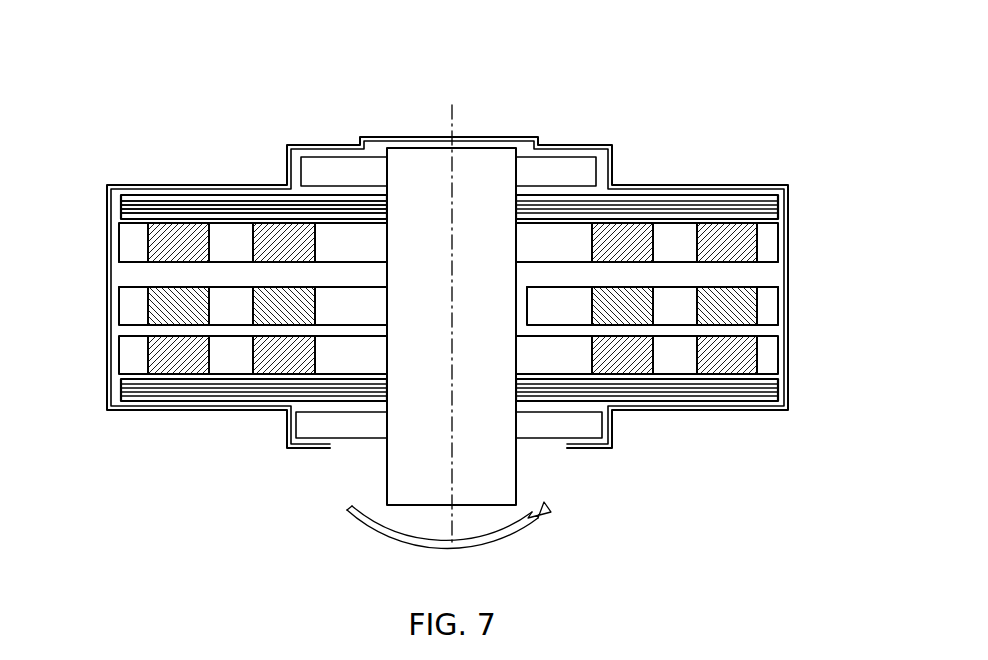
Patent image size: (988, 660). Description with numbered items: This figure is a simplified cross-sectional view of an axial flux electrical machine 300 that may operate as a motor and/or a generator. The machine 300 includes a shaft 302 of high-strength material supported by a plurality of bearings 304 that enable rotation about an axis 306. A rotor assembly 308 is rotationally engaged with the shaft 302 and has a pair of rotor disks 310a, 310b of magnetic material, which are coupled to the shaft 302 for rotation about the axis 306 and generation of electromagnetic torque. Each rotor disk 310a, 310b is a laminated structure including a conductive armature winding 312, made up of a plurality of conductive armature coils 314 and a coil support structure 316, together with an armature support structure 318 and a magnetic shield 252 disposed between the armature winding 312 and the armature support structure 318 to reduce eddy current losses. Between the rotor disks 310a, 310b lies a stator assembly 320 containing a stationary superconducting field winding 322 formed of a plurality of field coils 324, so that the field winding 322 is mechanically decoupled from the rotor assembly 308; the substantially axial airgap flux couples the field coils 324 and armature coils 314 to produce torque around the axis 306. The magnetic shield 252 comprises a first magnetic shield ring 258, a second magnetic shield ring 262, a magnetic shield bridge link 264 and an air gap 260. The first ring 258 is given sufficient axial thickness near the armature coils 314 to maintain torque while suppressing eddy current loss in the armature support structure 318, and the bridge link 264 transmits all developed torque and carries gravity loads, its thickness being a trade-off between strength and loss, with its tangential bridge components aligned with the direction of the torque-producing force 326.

The axial flux electrical machine 300 is at (371, 75).
The magnetic shield 252 is at (101, 218).
The first magnetic shield ring 258 is at (228, 213).
The air gap 260 is at (260, 210).
The second magnetic shield ring 262 is at (205, 202).
The magnetic shield bridge link 264 is at (130, 207).
The shaft 302 is at (387, 478).
The bearings 304 is at (573, 167).
The axis 306 is at (458, 118).
The rotor assembly 308 is at (858, 262).
The rotor disk 310a is at (120, 233).
The rotor disk 310b is at (118, 357).
The conductive armature winding 312 is at (667, 232).
The conductive armature coils 314 is at (180, 233).
The coil support structure 316 is at (763, 397).
The armature support structure 318 is at (150, 396).
The stator assembly 320 is at (798, 323).
The stationary superconducting field winding 322 is at (235, 376).
The field coils 324 is at (280, 287).
The torque-producing force 326 is at (533, 537).